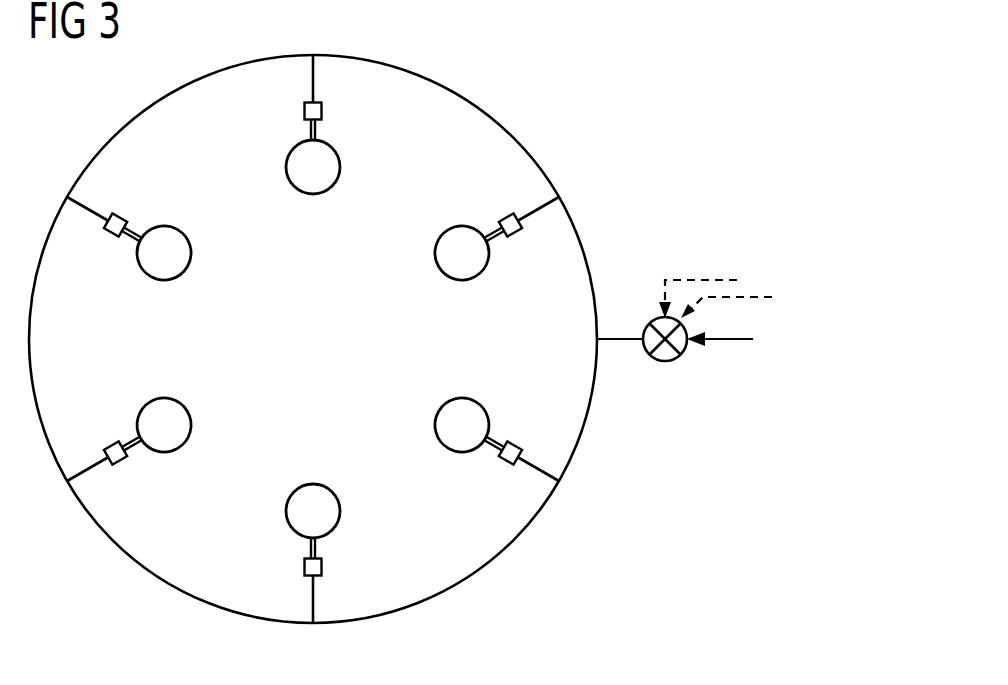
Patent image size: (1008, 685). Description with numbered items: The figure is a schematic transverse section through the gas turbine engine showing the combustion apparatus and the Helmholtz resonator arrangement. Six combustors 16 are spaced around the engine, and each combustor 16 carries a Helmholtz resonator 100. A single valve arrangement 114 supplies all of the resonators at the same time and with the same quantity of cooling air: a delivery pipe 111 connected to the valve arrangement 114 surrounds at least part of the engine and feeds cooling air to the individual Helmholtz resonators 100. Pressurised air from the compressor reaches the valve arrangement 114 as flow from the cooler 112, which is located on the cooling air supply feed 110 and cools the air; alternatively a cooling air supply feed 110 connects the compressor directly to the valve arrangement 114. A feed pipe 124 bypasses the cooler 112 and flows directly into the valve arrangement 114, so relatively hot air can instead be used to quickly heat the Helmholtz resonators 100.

The combustor 16 is at (165, 281).
The Helmholtz resonator 100 is at (338, 115).
The delivery pipe 111 is at (542, 163).
The valve arrangement 114 is at (675, 362).
The cooler 112 is at (791, 356).
The feed pipe 124 is at (697, 278).
The cooling air supply feed 110 is at (757, 297).